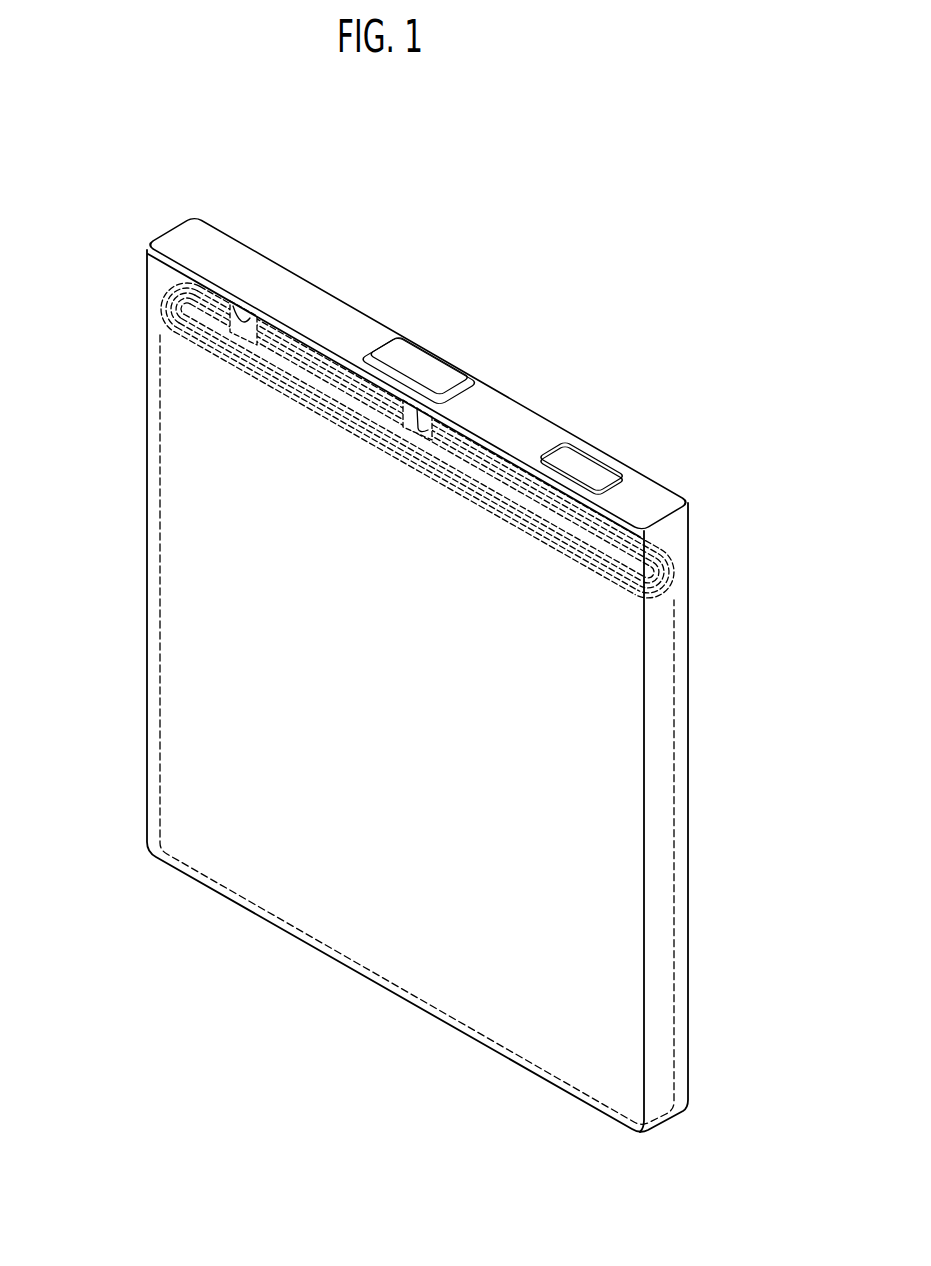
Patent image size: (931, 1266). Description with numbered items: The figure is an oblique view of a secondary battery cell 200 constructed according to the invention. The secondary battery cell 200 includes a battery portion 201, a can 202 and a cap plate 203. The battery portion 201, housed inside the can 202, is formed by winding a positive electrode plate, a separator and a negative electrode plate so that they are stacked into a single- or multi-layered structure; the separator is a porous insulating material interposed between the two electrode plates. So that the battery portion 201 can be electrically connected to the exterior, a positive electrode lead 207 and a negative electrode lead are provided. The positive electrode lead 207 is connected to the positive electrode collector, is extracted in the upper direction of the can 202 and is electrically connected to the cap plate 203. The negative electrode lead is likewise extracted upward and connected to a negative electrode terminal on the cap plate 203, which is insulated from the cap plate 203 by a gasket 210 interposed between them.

The secondary battery cell 200 is at (706, 272).
The battery portion 201 is at (766, 530).
The can 202 is at (690, 806).
The cap plate 203 is at (643, 495).
The positive electrode lead 207 is at (184, 298).
The gasket 210 is at (448, 417).